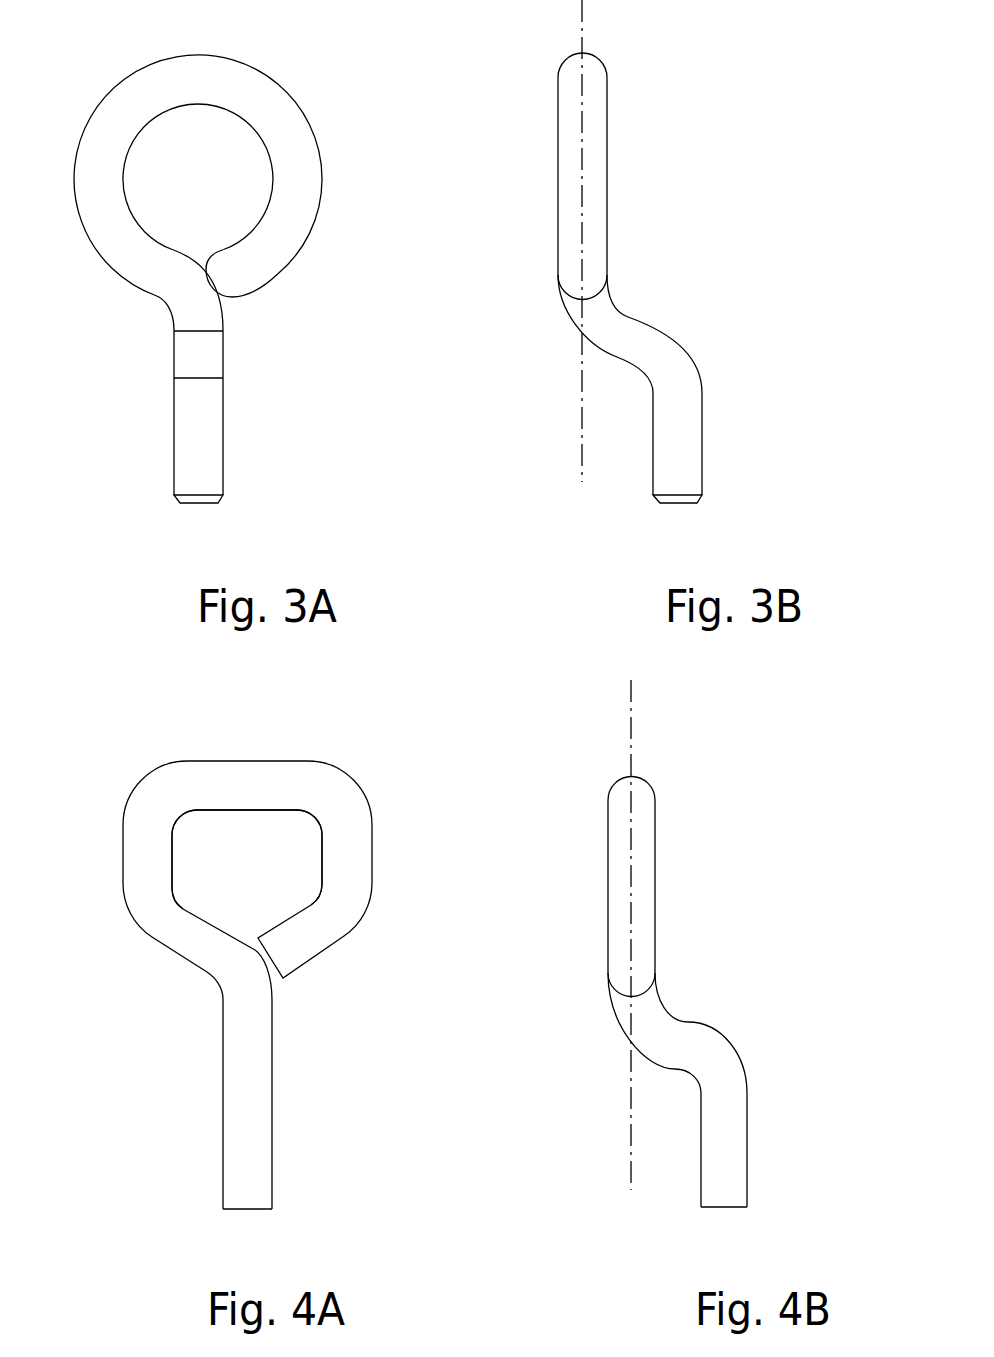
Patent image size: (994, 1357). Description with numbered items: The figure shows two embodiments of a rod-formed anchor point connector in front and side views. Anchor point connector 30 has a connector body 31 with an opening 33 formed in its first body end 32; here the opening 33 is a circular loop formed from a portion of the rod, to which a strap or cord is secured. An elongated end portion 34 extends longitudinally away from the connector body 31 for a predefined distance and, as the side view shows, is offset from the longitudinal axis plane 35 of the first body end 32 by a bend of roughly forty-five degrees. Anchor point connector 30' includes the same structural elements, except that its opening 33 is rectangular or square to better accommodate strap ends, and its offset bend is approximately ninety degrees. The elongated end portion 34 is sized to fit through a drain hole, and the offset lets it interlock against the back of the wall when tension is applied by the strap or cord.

In FIG. 3A, the anchor point connector 30 is at (287, 258).
In FIG. 3B, the anchor point connector 30 is at (631, 278).
In FIG. 4B, the anchor point connector 30' is at (622, 989).
In FIG. 3A, the connector body 31 is at (174, 331).
In FIG. 4A, the connector body 31 is at (223, 1029).
In FIG. 3A, the first body end 32 is at (123, 80).
In FIG. 4A, the first body end 32 is at (127, 810).
In FIG. 3A, the opening 33 is at (232, 160).
In FIG. 4A, the opening 33 is at (227, 898).
In FIG. 3A, the elongated end portion 34 is at (223, 458).
In FIG. 3B, the elongated end portion 34 is at (702, 455).
In FIG. 4A, the elongated end portion 34 is at (273, 1161).
In FIG. 4B, the elongated end portion 34 is at (747, 1145).
In FIG. 3B, the longitudinal axis plane 35 is at (582, 423).
In FIG. 4B, the longitudinal axis plane 35 is at (630, 1145).